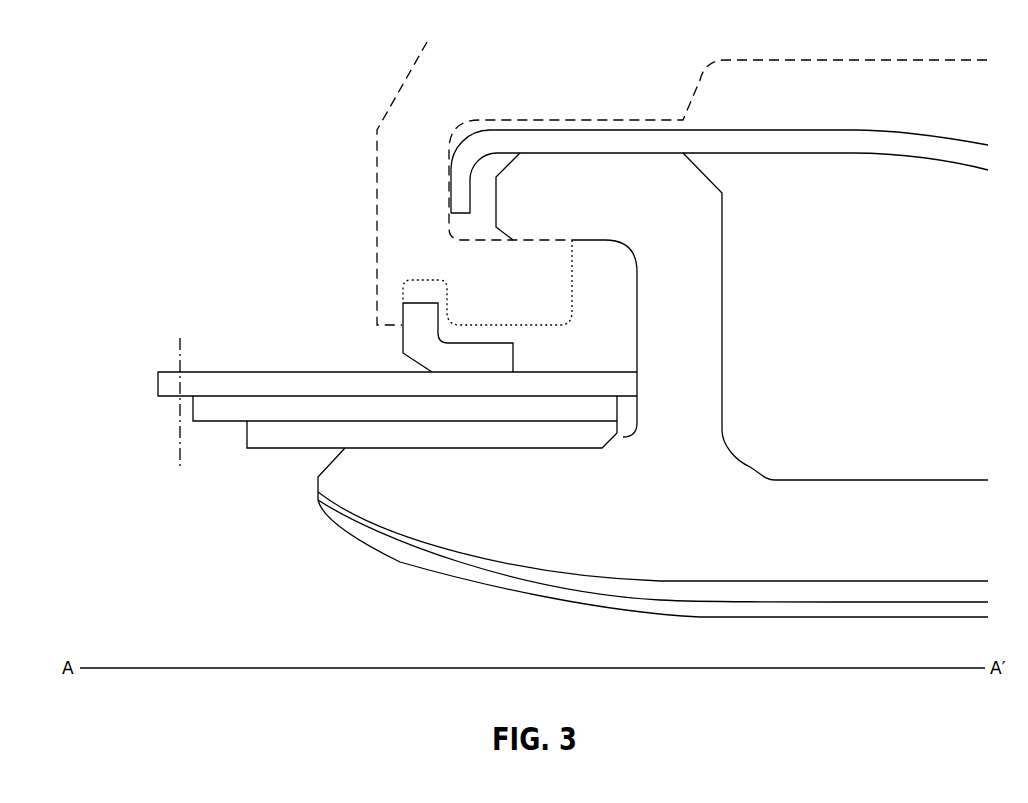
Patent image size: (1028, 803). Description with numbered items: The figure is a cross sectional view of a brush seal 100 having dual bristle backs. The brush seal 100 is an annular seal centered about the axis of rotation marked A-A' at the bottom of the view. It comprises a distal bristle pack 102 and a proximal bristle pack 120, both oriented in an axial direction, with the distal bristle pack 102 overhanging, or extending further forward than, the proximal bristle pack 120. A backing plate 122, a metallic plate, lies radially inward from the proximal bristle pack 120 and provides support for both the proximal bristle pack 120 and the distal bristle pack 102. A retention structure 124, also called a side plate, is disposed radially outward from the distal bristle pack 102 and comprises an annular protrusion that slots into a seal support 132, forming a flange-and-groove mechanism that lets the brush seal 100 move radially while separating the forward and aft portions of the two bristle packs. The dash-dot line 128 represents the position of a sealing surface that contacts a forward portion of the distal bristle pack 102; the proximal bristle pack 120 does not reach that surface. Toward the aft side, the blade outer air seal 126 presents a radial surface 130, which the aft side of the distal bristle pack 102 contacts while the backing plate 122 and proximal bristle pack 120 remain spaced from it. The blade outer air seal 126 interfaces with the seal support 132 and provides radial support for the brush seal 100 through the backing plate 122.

The brush seal 100 is at (240, 230).
The distal bristle pack 102 is at (278, 378).
The proximal bristle pack 120 is at (218, 415).
The backing plate 122 is at (290, 436).
The retention structure 124 is at (422, 348).
The blade outer air seal 126 is at (708, 275).
The line 128 is at (180, 432).
The radial surface 130 is at (623, 437).
The seal support 132 is at (403, 212).